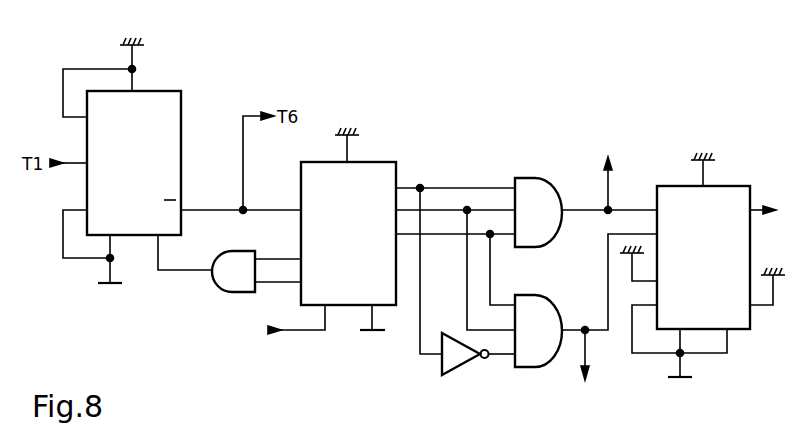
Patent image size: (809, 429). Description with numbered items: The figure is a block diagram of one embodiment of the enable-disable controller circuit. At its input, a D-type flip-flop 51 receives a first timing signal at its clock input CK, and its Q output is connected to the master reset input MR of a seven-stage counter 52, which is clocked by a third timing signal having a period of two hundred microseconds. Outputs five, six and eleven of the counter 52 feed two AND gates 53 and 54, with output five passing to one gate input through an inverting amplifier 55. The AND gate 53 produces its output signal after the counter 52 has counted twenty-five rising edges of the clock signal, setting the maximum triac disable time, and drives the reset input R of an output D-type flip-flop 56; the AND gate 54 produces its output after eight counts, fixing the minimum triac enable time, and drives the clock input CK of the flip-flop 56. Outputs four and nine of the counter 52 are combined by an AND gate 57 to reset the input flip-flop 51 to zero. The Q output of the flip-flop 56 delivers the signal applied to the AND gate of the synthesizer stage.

The input D-type flip-flop 51 is at (181, 88).
The seven-stage counter 52 is at (393, 160).
The AND gate 53 is at (537, 176).
The AND gate 54 is at (552, 296).
The inverting amplifier 55 is at (462, 370).
The output D-type flip-flop 56 is at (740, 185).
The AND gate 57 is at (215, 285).